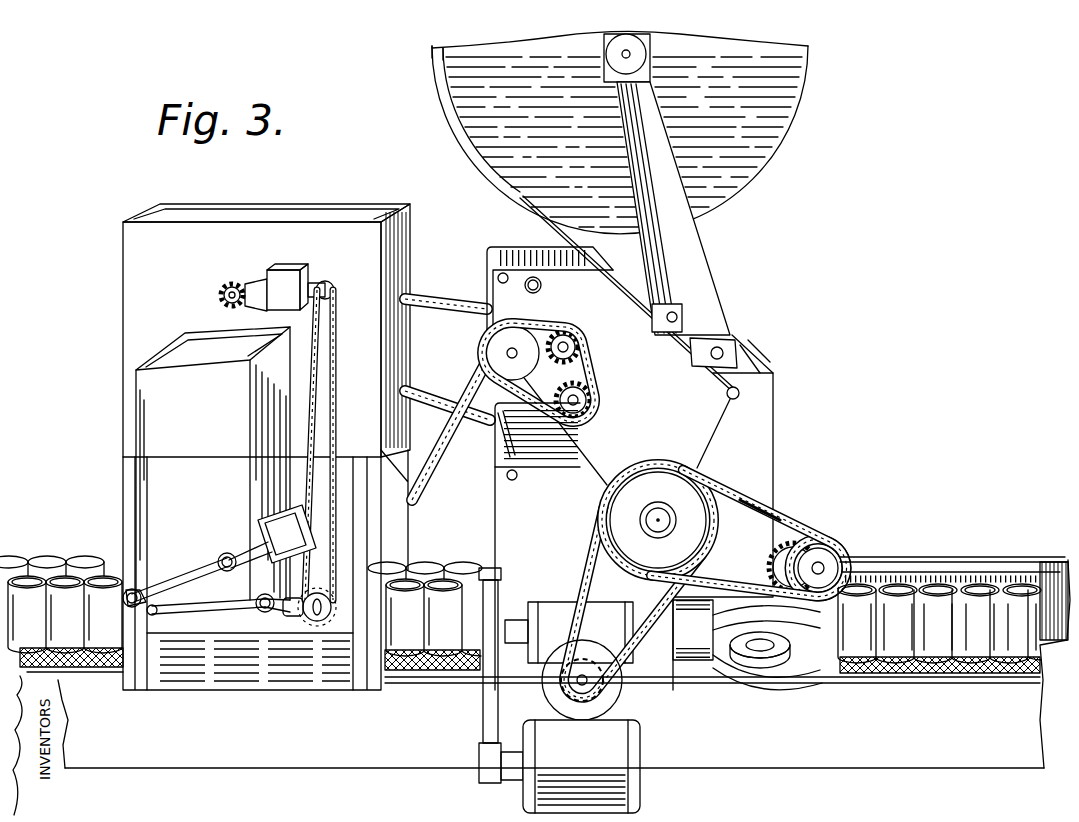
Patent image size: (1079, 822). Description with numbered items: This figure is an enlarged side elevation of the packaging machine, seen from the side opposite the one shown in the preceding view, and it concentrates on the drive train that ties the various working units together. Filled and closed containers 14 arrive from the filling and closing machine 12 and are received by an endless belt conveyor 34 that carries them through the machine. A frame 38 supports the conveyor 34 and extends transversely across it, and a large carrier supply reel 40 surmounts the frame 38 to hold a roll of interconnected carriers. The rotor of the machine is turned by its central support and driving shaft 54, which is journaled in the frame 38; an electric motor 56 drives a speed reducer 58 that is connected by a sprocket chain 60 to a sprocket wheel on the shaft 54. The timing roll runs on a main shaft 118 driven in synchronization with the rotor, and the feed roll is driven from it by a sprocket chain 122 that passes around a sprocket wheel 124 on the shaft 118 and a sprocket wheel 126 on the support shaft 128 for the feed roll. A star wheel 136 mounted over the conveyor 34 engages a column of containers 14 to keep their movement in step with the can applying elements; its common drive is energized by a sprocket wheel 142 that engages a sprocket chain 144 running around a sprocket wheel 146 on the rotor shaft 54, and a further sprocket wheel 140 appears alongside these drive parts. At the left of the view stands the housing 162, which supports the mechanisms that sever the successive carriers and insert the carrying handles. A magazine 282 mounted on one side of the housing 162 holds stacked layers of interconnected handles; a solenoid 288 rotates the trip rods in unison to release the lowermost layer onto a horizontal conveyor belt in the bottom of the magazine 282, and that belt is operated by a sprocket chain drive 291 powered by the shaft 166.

The container filling and closing machine 12 is at (147, 318).
The containers 14 is at (937, 607).
The endless belt conveyor 34 is at (898, 673).
The frame 38 is at (758, 402).
The carrier supply reel 40 is at (768, 135).
The central support and driving shaft 54 is at (661, 519).
The electric motor 56 is at (633, 793).
The speed reducer 58 is at (552, 603).
The sprocket chain 60 is at (590, 543).
The main shaft 118 is at (570, 412).
The sprocket chain 122 is at (581, 362).
The sprocket wheel 124 is at (584, 402).
The sprocket wheel 126 is at (503, 367).
The support shaft 128 is at (515, 350).
The star wheel 136 is at (773, 680).
The sprocket 140 is at (818, 567).
The sprocket wheel 142 is at (787, 547).
The sprocket chain 144 is at (760, 510).
The sprocket wheel 146 is at (697, 472).
The housing 162 is at (122, 256).
The shaft 166 is at (235, 282).
The magazine 282 is at (146, 372).
The solenoid 288 is at (263, 532).
The sprocket chain drive 291 is at (341, 392).